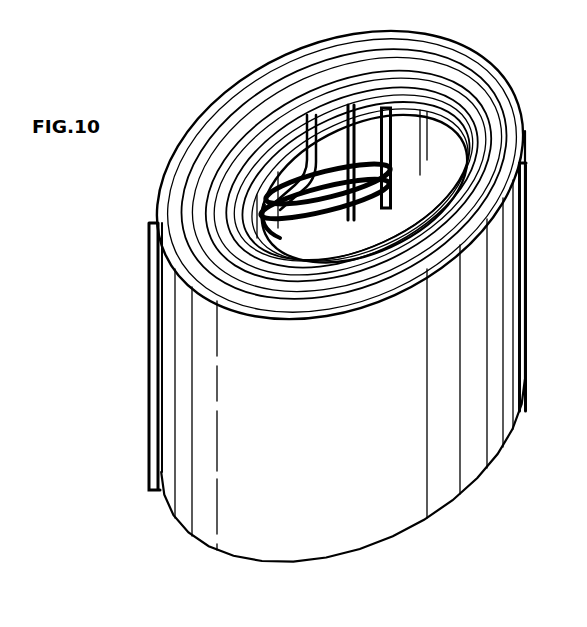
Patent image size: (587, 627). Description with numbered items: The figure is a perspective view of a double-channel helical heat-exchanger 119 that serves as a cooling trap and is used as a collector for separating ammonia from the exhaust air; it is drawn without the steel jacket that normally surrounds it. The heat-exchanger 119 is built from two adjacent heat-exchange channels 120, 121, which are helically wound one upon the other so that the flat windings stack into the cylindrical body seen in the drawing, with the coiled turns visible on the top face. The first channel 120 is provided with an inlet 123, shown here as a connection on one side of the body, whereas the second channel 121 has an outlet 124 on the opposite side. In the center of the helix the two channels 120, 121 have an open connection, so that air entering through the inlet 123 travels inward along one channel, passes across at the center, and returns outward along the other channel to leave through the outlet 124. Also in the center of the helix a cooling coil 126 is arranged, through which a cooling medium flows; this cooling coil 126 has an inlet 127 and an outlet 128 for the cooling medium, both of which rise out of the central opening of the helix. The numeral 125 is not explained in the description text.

The double-channel helical heat-exchanger 119 is at (526, 329).
The heat-exchange channel 120 is at (495, 208).
The heat-exchange channel 121 is at (159, 183).
The inlet 123 is at (527, 258).
The outlet 124 is at (149, 262).
The central bore 125 is at (408, 146).
The cooling coil 126 is at (323, 184).
The inlet 127 is at (391, 104).
The outlet 128 is at (307, 123).